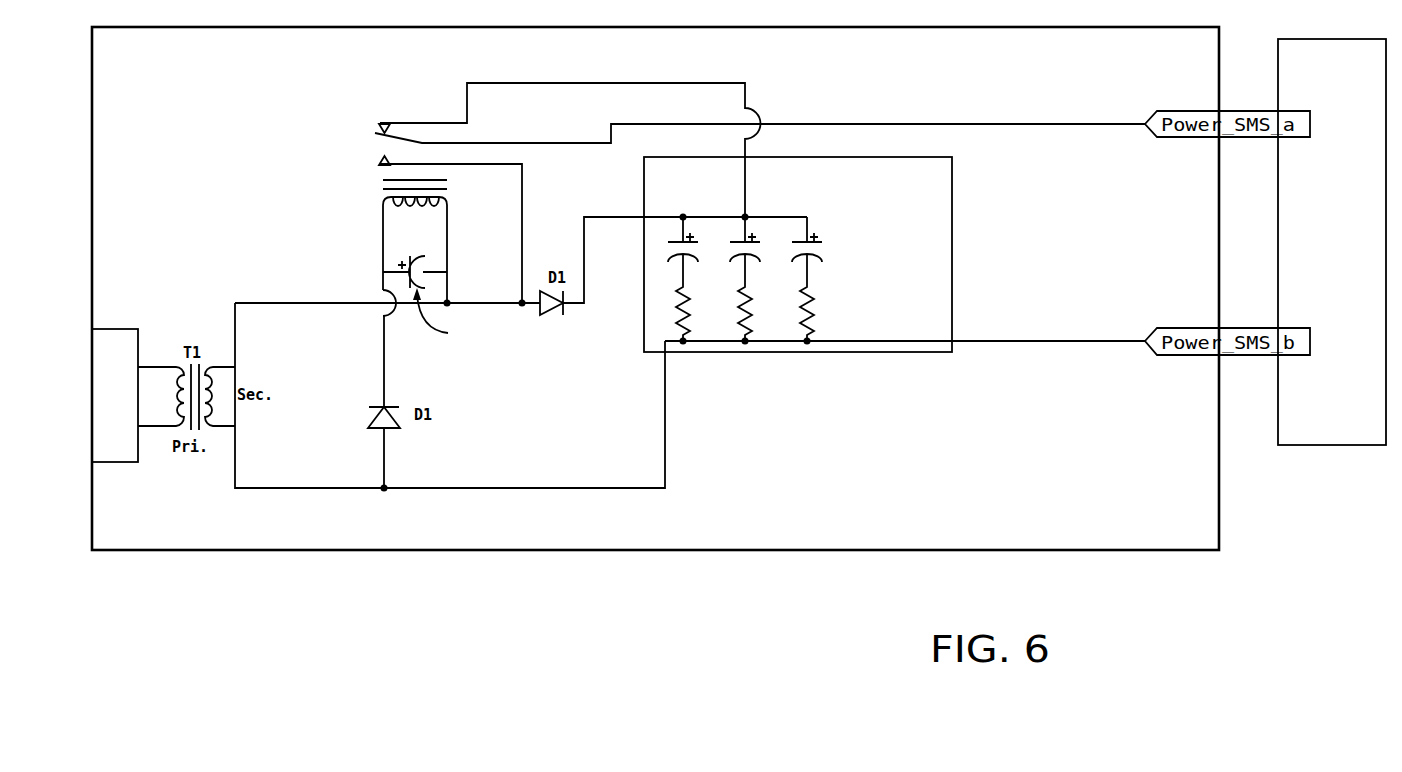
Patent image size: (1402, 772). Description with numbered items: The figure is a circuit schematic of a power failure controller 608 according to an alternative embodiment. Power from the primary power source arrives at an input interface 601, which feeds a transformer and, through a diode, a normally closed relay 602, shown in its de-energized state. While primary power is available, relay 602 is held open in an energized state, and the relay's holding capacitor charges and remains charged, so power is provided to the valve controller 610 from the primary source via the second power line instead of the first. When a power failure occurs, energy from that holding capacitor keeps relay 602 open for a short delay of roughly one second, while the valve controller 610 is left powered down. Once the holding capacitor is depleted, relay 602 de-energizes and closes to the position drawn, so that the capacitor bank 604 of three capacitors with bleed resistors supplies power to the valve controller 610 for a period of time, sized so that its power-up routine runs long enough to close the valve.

The input interface 601 is at (122, 328).
The normally closed relay 602 is at (398, 104).
The capacitor bank 604 is at (952, 238).
The power failure controller 608 is at (693, 650).
The valve controller 610 is at (1319, 446).